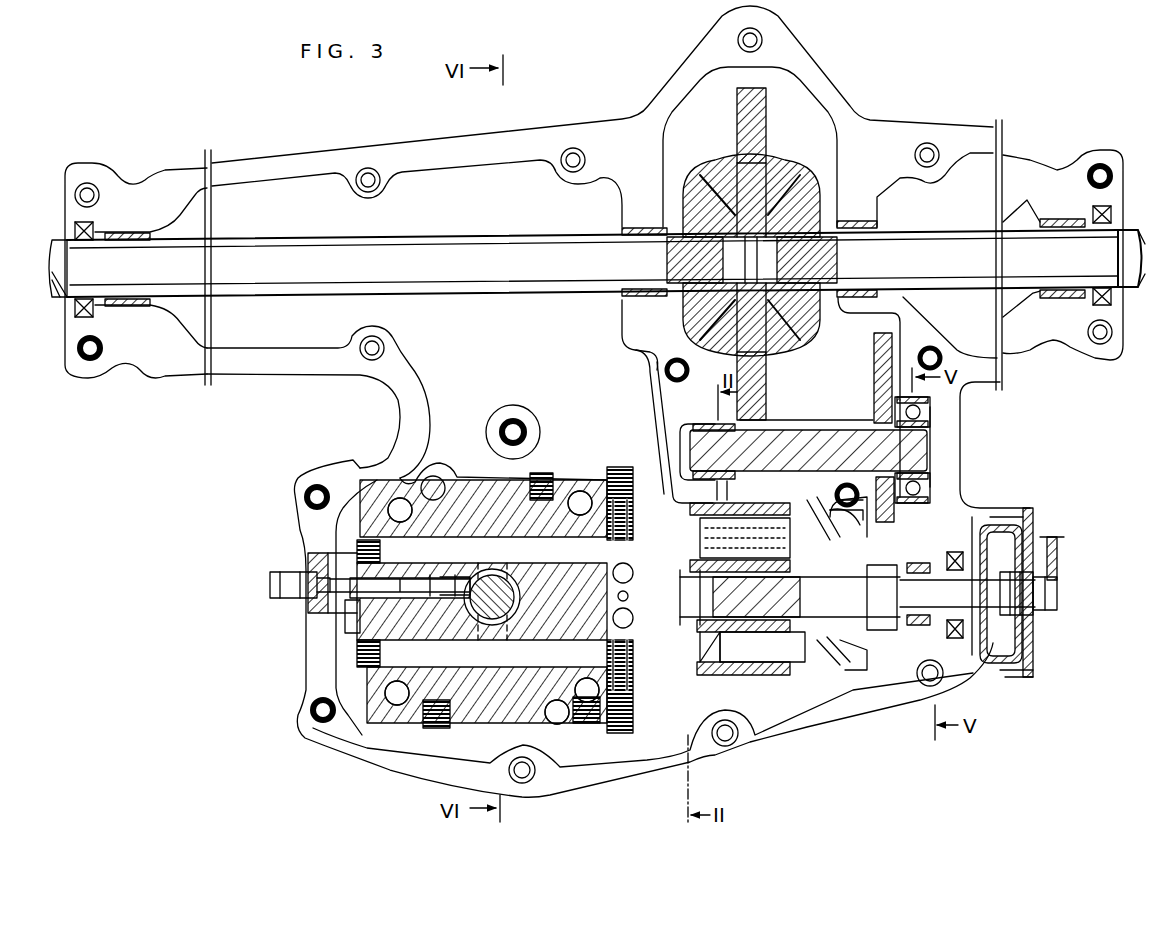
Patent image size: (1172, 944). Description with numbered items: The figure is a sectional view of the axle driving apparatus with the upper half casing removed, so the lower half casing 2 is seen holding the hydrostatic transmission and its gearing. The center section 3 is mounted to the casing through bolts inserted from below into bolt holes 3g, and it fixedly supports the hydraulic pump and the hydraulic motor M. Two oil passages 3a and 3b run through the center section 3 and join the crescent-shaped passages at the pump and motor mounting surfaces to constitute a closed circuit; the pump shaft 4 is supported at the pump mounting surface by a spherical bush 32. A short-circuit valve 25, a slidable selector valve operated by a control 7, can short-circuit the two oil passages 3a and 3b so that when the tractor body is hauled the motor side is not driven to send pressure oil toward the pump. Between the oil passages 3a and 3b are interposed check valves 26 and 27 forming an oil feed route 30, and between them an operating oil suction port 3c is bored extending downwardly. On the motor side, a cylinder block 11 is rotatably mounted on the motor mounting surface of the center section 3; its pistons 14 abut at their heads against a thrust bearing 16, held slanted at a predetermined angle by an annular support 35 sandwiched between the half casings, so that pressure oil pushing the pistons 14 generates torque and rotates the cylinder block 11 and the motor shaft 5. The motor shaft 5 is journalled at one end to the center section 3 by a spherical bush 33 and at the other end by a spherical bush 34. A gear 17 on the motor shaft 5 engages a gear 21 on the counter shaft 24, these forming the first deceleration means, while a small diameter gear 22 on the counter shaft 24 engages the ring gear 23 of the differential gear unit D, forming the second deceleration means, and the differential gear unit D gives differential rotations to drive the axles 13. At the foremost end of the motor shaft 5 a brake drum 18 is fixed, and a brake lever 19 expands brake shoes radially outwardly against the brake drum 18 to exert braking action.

The lower half casing 2 is at (505, 130).
The axles 13 is at (471, 239).
The differential gear unit D is at (713, 166).
The center section 3 is at (484, 478).
The oil passage 3a is at (525, 601).
The oil passage 3b is at (482, 699).
The operating oil suction port 3c is at (705, 582).
The bolt holes 3g is at (395, 500).
The pump shaft 4 is at (476, 656).
The motor shaft 5 is at (921, 568).
The control 7 is at (273, 592).
The cylinder block 11 is at (757, 680).
The pistons 14 is at (770, 658).
The thrust bearing 16 is at (778, 531).
The gear 17 is at (880, 640).
The brake drum 18 is at (1006, 656).
The brake lever 19 is at (1058, 550).
The gear 21 is at (874, 385).
The small diameter gear 22 is at (823, 423).
The ring gear 23 is at (767, 380).
The counter shaft 24 is at (830, 467).
The short-circuit valve 25 is at (322, 556).
The check valve 26 is at (615, 566).
The check valve 27 is at (617, 628).
The oil feed route 30 is at (620, 467).
The spherical bush 32 is at (457, 470).
The spherical bush 33 is at (693, 700).
The spherical bush 34 is at (985, 672).
The annular support 35 is at (850, 672).
The hydraulic motor M is at (753, 692).